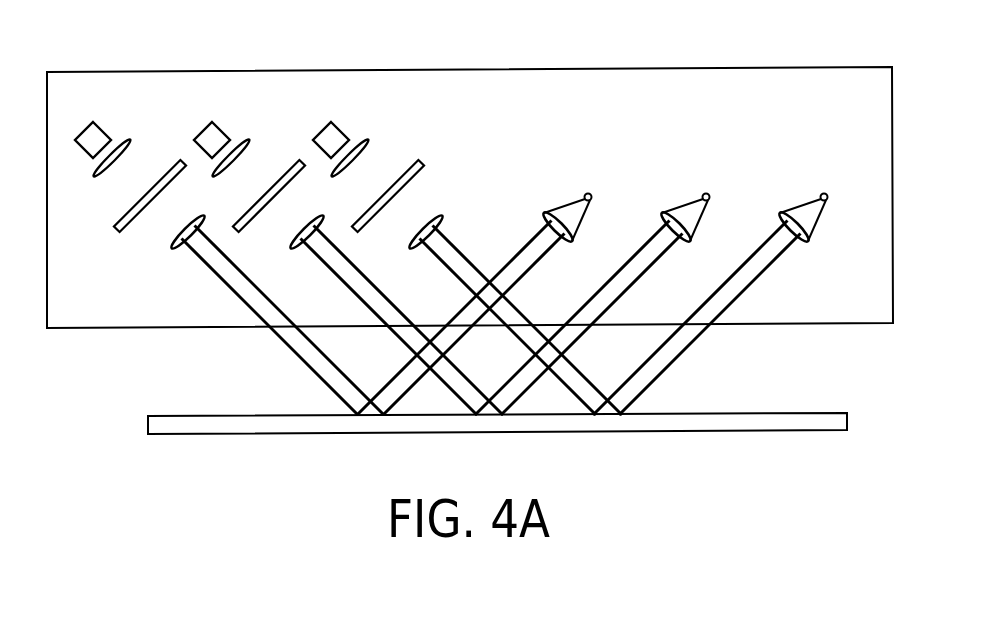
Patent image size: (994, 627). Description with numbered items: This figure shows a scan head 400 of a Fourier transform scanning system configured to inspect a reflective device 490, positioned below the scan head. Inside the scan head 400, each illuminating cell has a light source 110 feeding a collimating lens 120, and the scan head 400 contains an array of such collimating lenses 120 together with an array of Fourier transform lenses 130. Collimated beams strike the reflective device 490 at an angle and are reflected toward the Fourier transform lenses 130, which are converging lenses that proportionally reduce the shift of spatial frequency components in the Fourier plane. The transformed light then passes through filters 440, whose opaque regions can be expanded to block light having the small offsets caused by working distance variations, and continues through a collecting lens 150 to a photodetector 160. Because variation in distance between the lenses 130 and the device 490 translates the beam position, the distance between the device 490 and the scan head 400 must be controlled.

The scan head 400 is at (652, 66).
The reflective device 490 is at (785, 412).
The light source 110 is at (608, 180).
The collimating lens 120 is at (565, 241).
The Fourier transform lens 130 is at (173, 250).
The filter 440 is at (130, 234).
The collecting lens 150 is at (125, 140).
The photodetector 160 is at (83, 129).